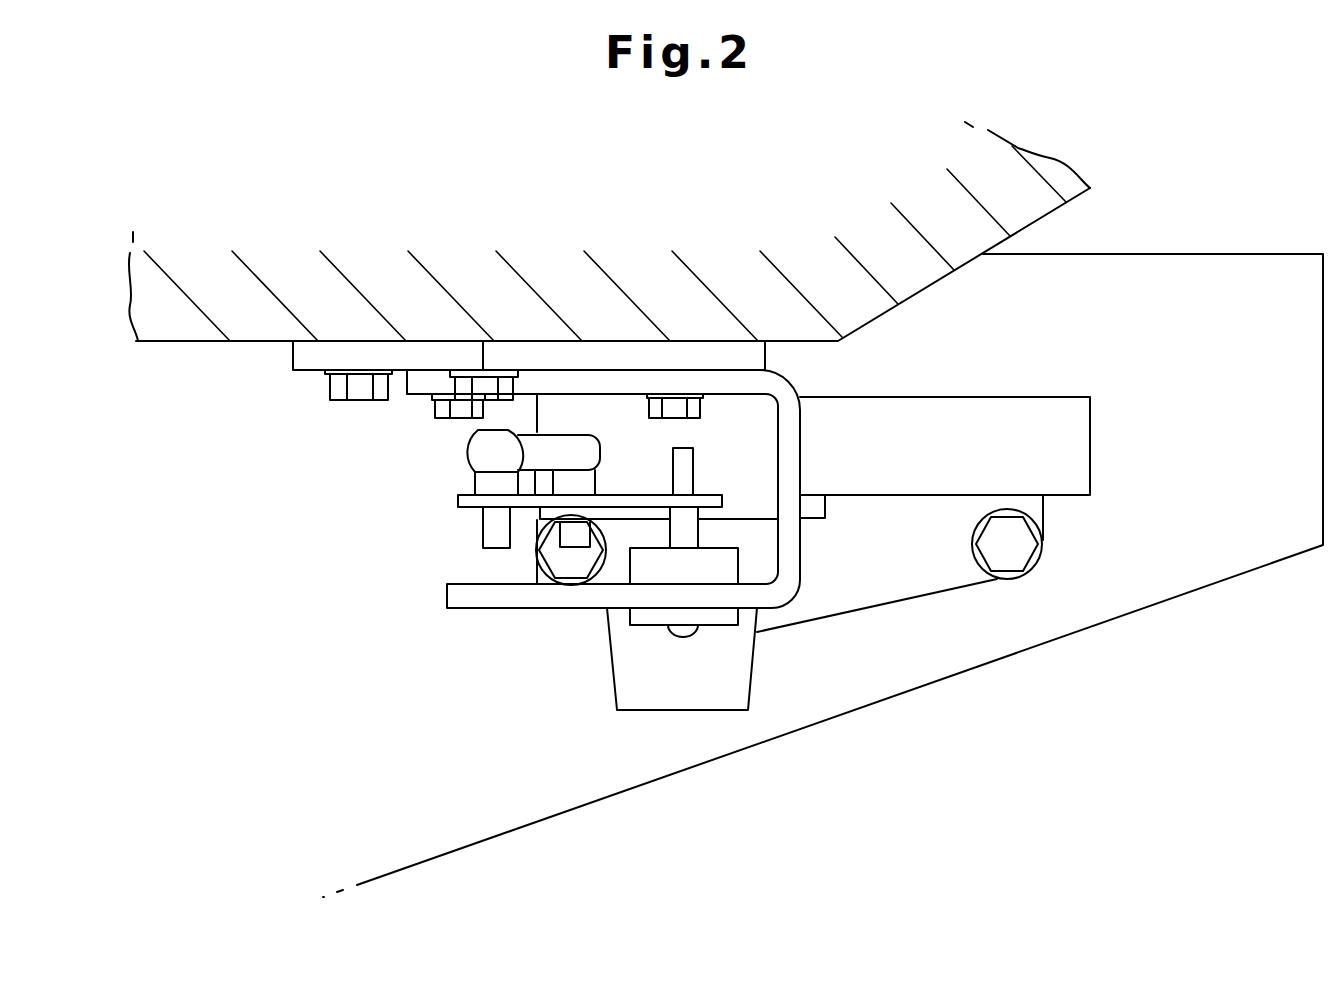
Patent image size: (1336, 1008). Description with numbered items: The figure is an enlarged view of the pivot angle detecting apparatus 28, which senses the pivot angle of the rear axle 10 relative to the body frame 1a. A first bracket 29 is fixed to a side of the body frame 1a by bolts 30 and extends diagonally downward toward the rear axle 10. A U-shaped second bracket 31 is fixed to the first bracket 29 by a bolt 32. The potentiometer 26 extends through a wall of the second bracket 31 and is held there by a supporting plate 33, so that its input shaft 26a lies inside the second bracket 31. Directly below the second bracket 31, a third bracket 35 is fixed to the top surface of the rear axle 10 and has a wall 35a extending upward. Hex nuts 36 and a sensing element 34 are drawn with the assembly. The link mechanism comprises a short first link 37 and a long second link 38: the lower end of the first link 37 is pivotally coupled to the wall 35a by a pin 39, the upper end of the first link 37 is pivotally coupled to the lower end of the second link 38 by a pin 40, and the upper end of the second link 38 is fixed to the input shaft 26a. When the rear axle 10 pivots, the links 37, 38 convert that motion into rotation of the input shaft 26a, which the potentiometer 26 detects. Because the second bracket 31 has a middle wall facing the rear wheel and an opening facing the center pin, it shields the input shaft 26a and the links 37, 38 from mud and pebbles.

The body frame 1a is at (930, 287).
The rear axle 10 is at (870, 705).
The potentiometer 26 is at (613, 683).
The input shaft 26a is at (695, 475).
The pivot angle detecting apparatus 28 is at (437, 625).
The first bracket 29 is at (765, 355).
The bolts 30 is at (357, 400).
The second bracket 31 is at (788, 447).
The bolt 32 is at (452, 418).
The supporting plate 33 is at (718, 627).
The sensing element 34 is at (680, 640).
The third bracket 35 is at (1073, 442).
The wall 35a is at (540, 513).
The hex nut 36 is at (555, 557).
The first link 37 is at (573, 452).
The second link 38 is at (610, 498).
The pin 39 is at (575, 543).
The pin 40 is at (484, 524).